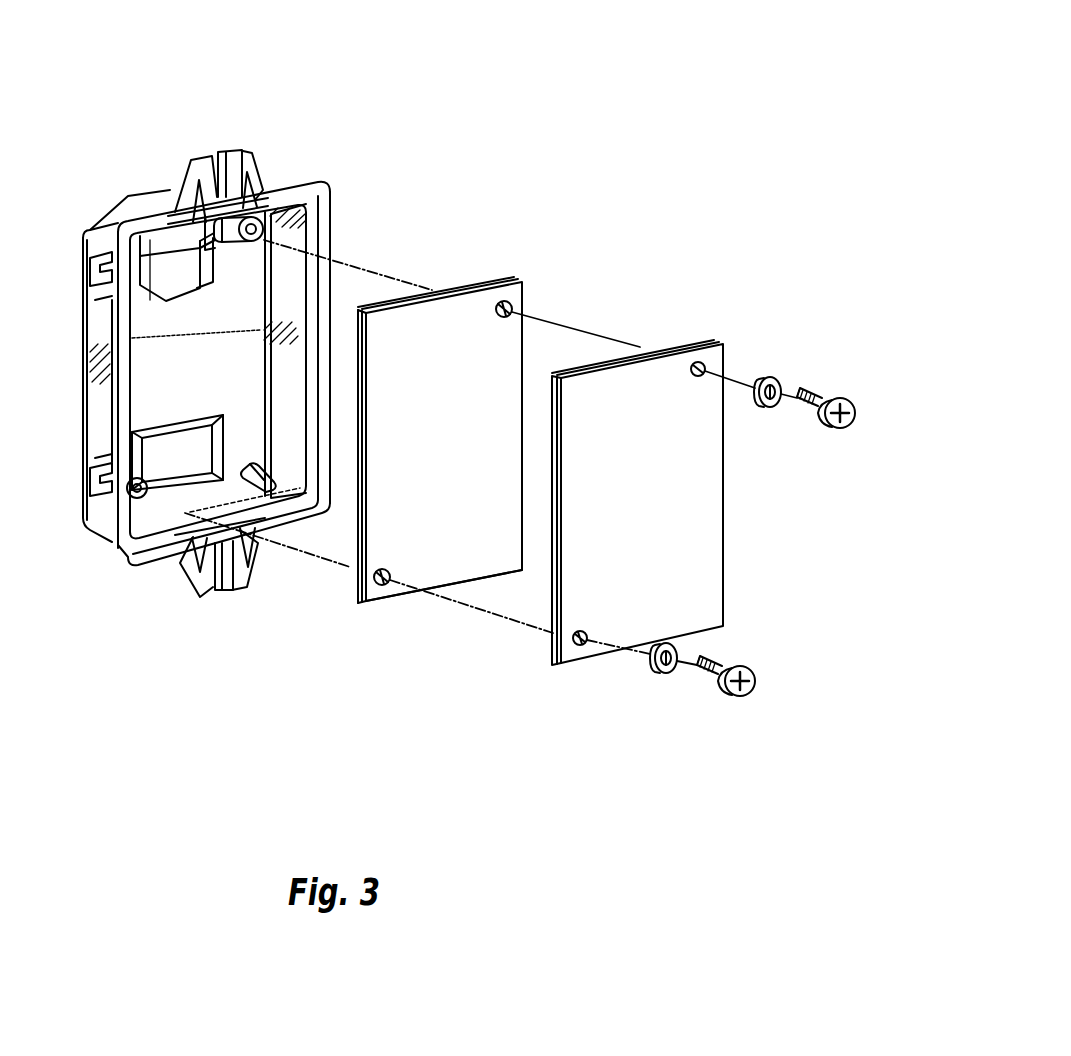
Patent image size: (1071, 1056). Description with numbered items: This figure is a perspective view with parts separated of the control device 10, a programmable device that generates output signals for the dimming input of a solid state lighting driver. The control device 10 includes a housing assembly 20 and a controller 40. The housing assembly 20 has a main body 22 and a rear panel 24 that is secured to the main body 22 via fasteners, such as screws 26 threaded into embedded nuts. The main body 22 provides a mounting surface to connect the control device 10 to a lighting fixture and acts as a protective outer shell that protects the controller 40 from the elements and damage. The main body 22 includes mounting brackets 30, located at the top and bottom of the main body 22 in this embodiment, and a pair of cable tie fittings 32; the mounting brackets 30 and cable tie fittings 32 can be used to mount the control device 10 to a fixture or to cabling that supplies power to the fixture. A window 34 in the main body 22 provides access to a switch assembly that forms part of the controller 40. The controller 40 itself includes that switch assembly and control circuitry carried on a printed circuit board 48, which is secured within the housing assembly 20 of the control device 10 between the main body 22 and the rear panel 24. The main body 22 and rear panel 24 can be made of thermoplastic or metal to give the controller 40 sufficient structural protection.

The control device 10 is at (599, 107).
The housing assembly 20 is at (81, 395).
The main body 22 is at (331, 221).
The rear panel 24 is at (689, 342).
The screws 26 is at (818, 395).
The mounting brackets 30 is at (178, 208).
The cable tie fittings 32 is at (92, 280).
The window 34 is at (180, 464).
The controller 40 is at (501, 279).
The printed circuit board 48 is at (399, 602).